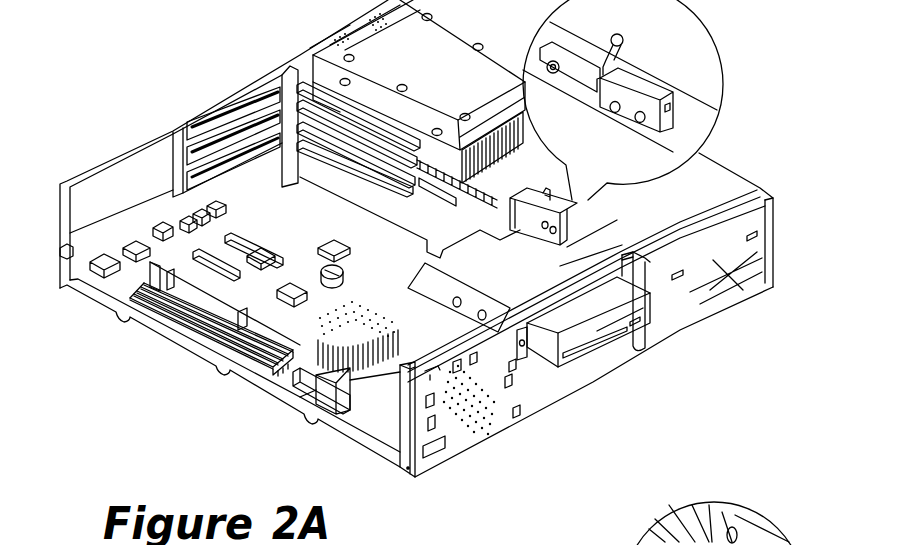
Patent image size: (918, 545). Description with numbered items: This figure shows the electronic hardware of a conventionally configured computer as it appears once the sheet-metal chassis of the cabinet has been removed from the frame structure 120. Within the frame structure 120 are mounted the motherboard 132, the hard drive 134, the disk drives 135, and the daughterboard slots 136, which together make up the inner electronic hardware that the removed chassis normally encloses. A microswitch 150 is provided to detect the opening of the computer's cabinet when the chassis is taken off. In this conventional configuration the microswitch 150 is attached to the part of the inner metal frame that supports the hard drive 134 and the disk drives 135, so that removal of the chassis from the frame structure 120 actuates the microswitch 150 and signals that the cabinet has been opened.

The frame structure 120 is at (340, 418).
The motherboard 132 is at (323, 307).
The hard drive 134 is at (374, 45).
The disk drives 135 is at (700, 268).
The daughterboard slots 136 is at (352, 152).
The microswitch 150 is at (648, 100).